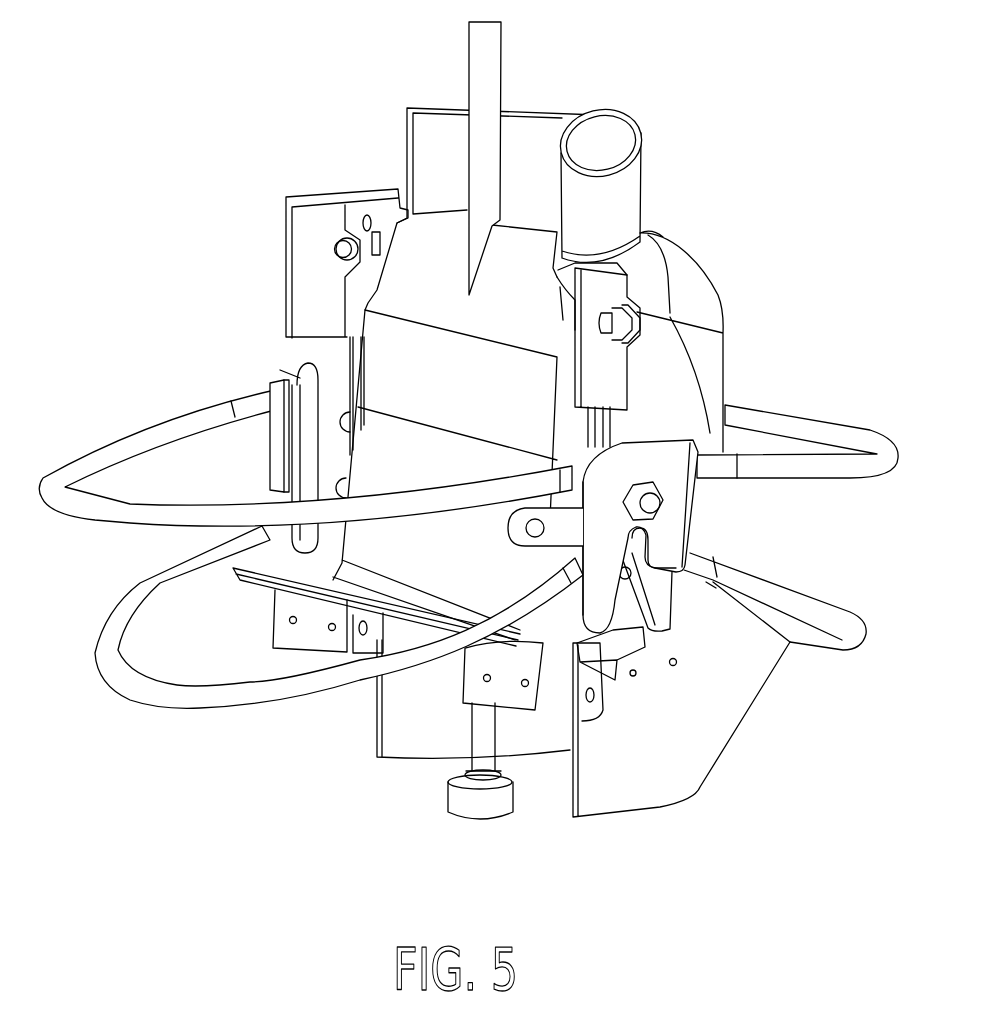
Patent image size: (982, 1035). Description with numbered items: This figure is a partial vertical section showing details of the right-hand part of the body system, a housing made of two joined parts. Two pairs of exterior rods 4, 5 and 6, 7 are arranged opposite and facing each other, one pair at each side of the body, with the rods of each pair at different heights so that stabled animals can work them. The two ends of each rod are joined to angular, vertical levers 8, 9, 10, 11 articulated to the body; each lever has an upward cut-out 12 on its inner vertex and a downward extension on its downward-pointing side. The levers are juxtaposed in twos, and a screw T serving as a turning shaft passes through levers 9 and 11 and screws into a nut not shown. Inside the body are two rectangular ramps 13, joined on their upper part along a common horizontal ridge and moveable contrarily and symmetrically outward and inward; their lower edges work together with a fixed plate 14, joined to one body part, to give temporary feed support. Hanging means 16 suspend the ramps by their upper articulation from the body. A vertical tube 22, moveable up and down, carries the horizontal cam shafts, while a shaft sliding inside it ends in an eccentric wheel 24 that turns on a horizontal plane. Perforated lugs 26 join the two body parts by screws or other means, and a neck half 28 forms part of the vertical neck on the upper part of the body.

The exterior rod 4 is at (826, 432).
The exterior rod 5 is at (838, 618).
The exterior rod 6 is at (97, 448).
The exterior rod 7 is at (102, 628).
The lever 8 is at (340, 362).
The lever 9 is at (673, 458).
The lever 10 is at (268, 440).
The lever 11 is at (661, 612).
The upward cut-out 12 is at (643, 545).
The rectangular ramp 13 is at (548, 383).
The fixed plate 14 is at (257, 578).
The hanging means 16 is at (563, 293).
The vertical tube 22 is at (488, 60).
The eccentric wheel 24 is at (463, 803).
The lug 26 is at (590, 700).
The neck half 28 is at (622, 178).
The screw T is at (652, 503).